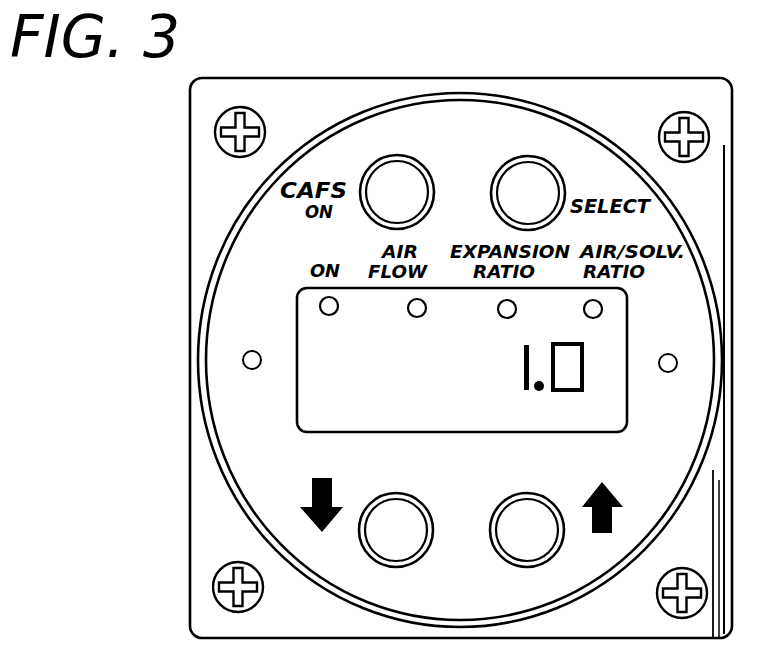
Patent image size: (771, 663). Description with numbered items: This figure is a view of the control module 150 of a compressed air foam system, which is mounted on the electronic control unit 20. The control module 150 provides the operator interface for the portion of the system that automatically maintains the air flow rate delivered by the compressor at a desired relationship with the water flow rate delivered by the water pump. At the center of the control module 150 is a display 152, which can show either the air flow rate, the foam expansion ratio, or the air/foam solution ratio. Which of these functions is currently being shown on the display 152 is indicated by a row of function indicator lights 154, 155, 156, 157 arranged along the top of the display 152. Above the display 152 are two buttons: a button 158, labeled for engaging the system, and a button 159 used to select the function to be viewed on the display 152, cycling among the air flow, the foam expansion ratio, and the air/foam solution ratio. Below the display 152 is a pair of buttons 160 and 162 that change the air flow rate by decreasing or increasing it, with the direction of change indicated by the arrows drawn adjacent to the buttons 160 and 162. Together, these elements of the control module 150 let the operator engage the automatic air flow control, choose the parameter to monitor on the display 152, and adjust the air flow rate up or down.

The electronic control unit 20 is at (386, 74).
The control module 150 is at (213, 437).
The display 152 is at (627, 406).
The function indicator light 154 is at (352, 330).
The function indicator light 155 is at (418, 318).
The function indicator light 156 is at (507, 319).
The function indicator light 157 is at (602, 310).
The button 158 is at (386, 170).
The button 159 is at (528, 172).
The button 160 is at (414, 457).
The button 162 is at (526, 505).